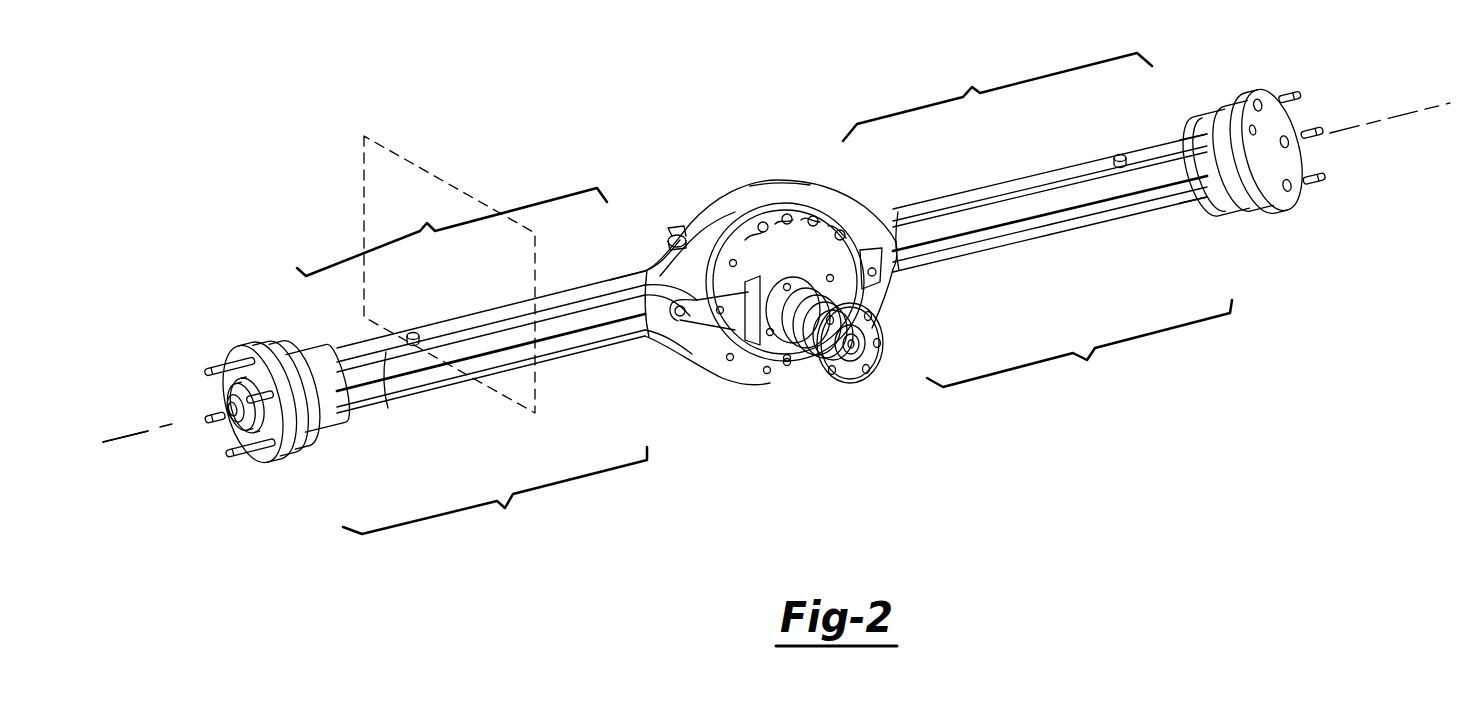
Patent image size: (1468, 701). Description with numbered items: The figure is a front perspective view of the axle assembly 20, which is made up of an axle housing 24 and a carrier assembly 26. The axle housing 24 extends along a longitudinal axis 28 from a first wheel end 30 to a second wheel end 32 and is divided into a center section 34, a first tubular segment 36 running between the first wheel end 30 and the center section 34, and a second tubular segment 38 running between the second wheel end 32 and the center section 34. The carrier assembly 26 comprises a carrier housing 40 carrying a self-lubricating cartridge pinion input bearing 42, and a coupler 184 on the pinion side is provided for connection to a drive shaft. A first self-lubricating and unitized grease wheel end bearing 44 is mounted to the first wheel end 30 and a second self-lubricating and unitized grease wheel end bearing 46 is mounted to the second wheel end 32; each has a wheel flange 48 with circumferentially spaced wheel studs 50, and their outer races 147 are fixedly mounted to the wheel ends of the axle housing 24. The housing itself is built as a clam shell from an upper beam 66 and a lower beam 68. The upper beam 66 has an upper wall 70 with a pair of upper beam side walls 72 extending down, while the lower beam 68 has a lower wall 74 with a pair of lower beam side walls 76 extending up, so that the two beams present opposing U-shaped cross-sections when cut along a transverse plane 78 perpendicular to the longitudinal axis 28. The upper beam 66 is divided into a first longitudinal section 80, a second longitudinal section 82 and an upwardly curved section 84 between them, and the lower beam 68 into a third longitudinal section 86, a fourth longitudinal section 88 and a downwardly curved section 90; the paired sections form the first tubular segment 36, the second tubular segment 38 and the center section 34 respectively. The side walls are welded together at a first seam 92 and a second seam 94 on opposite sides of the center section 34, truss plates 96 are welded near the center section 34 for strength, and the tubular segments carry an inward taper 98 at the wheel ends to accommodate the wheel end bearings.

The axle assembly 20 is at (509, 88).
The axle housing 24 is at (622, 267).
The carrier assembly 26 is at (794, 275).
The longitudinal axis 28 is at (167, 422).
The first wheel end 30 is at (1236, 160).
The second wheel end 32 is at (237, 421).
The center section 34 is at (703, 187).
The first tubular segment 36 is at (997, 169).
The second tubular segment 38 is at (492, 301).
The carrier housing 40 is at (827, 228).
The self-lubricating cartridge pinion input bearing 42 is at (763, 372).
The first self-lubricating and unitized grease wheel end bearing 44 is at (1252, 228).
The second self-lubricating and unitized grease wheel end bearing 46 is at (288, 478).
The wheel flanges 48 is at (278, 418).
The wheel studs 50 is at (222, 410).
The upper beam 66 is at (1129, 144).
The lower beam 68 is at (1161, 214).
The upper wall 70 is at (1044, 178).
The upper beam side walls 72 is at (953, 233).
The lower wall 74 is at (1047, 238).
The lower beam side walls 76 is at (981, 242).
The transverse plane 78 is at (385, 190).
The first longitudinal section 80 is at (997, 97).
The second longitudinal section 82 is at (452, 232).
The upwardly curved section 84 is at (770, 186).
The third longitudinal section 86 is at (1079, 346).
The fourth longitudinal section 88 is at (495, 493).
The downwardly curved section 90 is at (703, 355).
The first seam 92 is at (1088, 212).
The second seam 94 is at (420, 378).
The truss plates 96 is at (640, 272).
The inward taper 98 is at (334, 345).
The outer races 147 is at (291, 346).
The coupler 184 is at (851, 371).